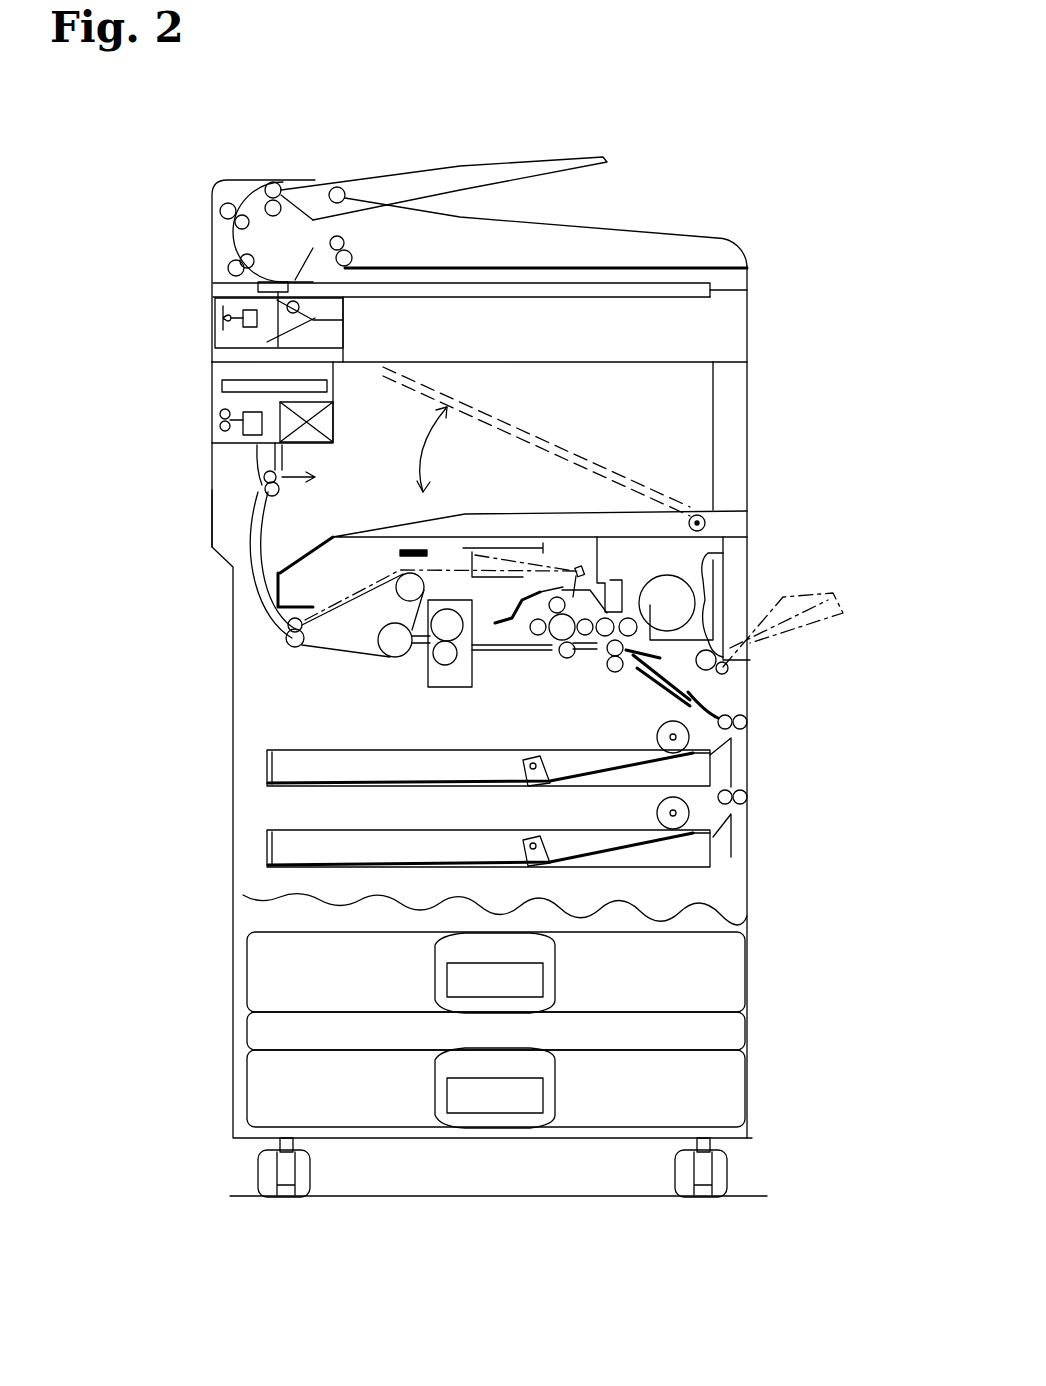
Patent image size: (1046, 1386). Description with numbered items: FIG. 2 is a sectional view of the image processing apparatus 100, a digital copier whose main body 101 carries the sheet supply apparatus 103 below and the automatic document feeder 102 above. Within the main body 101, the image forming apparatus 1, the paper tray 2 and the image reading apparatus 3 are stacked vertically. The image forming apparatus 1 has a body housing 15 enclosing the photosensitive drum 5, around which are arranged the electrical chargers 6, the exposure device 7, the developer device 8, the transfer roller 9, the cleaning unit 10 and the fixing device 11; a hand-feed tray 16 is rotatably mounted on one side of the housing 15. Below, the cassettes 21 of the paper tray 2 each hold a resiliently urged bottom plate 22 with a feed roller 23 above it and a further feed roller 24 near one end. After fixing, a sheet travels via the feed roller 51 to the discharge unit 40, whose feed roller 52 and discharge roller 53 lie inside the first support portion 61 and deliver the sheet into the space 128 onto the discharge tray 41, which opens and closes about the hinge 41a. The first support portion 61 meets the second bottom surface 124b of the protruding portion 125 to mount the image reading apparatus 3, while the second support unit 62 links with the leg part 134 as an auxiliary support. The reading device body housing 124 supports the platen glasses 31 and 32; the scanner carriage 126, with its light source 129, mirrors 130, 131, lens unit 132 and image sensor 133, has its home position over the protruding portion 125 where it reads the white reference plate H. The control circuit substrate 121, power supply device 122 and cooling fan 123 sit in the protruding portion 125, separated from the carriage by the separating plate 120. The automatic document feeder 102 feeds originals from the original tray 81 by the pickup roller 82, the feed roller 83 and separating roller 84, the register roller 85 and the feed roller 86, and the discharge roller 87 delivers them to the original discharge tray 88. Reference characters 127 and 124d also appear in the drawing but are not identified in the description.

The image processing apparatus 100 is at (690, 100).
The image processing apparatus main body 101 is at (112, 892).
The automatic document feeder 102 is at (210, 196).
The sheet supply apparatus 103 is at (233, 986).
The image forming apparatus 1 is at (777, 691).
The paper tray 2 is at (777, 832).
The image reading apparatus 3 is at (766, 338).
The photosensitive drum 5 is at (558, 638).
The electrical chargers 6 is at (540, 590).
The exposure device 7 is at (491, 535).
The developer device 8 is at (614, 620).
The transfer roller 9 is at (567, 659).
The cleaning unit 10 is at (535, 634).
The fixing device 11 is at (446, 688).
The forming apparatus body housing 15 is at (752, 571).
The hand-feed tray 16 is at (836, 622).
The cassette 21 is at (320, 752).
The bottom plate 22 is at (600, 774).
The feed roller 23 is at (673, 734).
The feed roller 24 is at (748, 723).
The platen glass 31 is at (750, 293).
The platen glass 32 is at (275, 283).
The white reference plate H is at (309, 252).
The discharge unit 40 is at (340, 474).
The discharge tray 41 is at (545, 512).
The hinge 41a is at (708, 526).
The feed roller 51 is at (290, 645).
The feed roller 52 is at (258, 603).
The discharge roller 53 is at (279, 493).
The first support portion 61 is at (226, 528).
The second support unit 62 is at (737, 473).
The original tray 81 is at (541, 162).
The pickup roller 82 is at (345, 192).
The feed roller 83 is at (273, 182).
The separating roller 84 is at (312, 189).
The register roller 85 is at (231, 204).
The feed roller 86 is at (231, 263).
The discharge roller 87 is at (352, 246).
The original discharge tray 88 is at (622, 266).
The separating plate 120 is at (295, 402).
The control circuit substrate 121 is at (250, 398).
The power supply device 122 is at (328, 420).
The cooling fan 123 is at (257, 445).
The reading device body housing 124 is at (557, 363).
The second bottom surface 124b is at (283, 447).
The harness portion 124d is at (495, 364).
The protruding portion 125 is at (315, 445).
The scanner carriage 126 is at (214, 300).
The upper frame 127 is at (737, 314).
The space 128 is at (640, 408).
The light source 129 is at (300, 309).
The mirror 130 is at (222, 385).
The mirror 131 is at (343, 321).
The lens unit 132 is at (268, 341).
The image sensor 133 is at (222, 316).
The leg part 134 is at (750, 394).